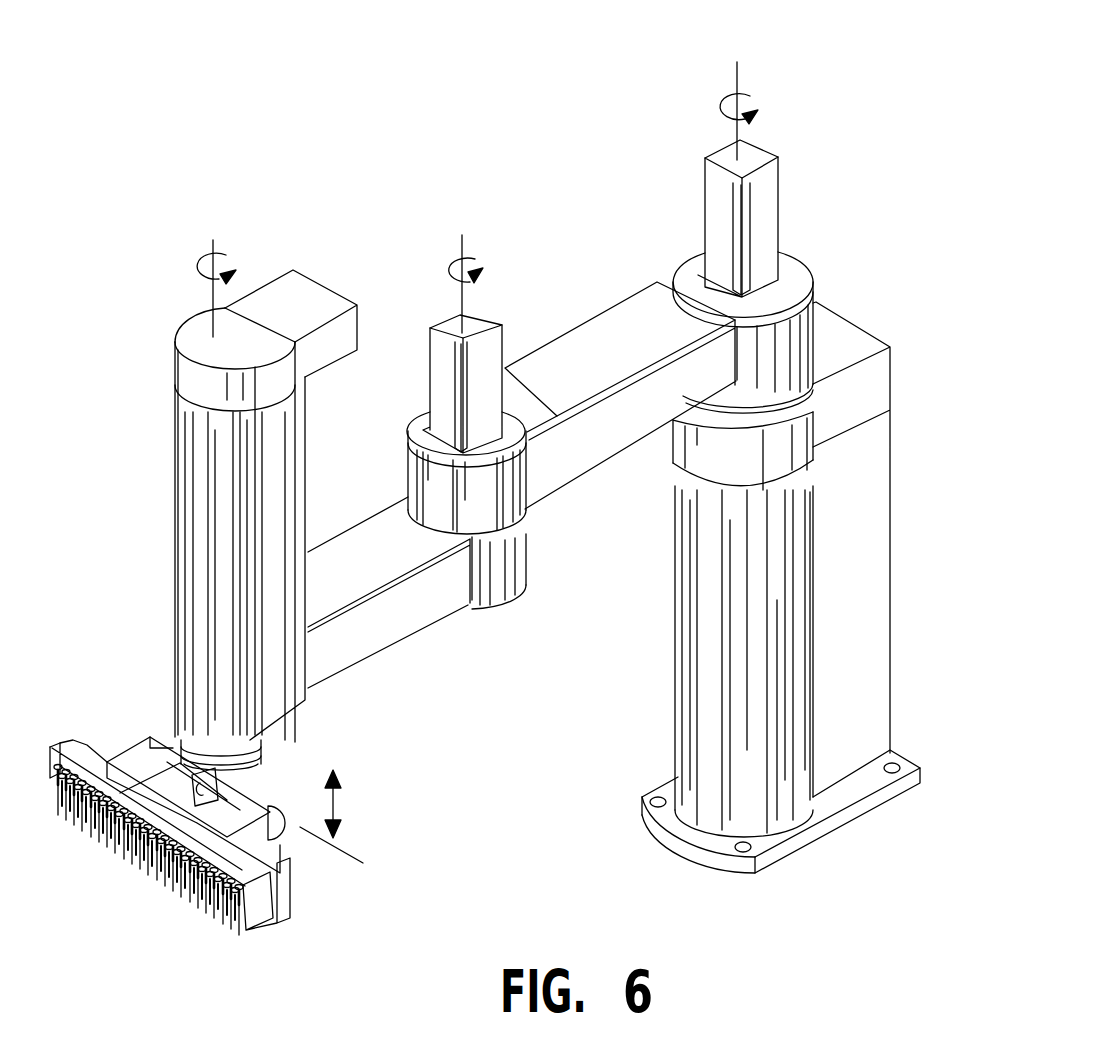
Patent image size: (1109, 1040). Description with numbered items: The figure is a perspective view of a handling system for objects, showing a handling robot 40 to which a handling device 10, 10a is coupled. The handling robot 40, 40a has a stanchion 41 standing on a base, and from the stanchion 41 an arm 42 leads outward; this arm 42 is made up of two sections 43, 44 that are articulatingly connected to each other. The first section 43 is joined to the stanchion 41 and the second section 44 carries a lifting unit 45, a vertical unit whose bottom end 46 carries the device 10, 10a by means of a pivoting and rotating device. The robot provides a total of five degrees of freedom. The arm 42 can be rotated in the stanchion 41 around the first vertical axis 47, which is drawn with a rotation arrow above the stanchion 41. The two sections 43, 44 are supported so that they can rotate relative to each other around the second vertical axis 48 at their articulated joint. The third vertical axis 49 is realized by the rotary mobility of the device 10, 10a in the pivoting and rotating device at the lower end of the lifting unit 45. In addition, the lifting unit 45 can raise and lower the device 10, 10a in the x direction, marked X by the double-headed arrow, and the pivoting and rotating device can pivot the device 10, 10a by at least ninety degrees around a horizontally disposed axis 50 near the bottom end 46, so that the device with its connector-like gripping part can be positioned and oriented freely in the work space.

The device 10 is at (314, 921).
The device 10a is at (147, 837).
The handling robot 40 is at (644, 636).
The robot arm 40a is at (485, 510).
The stanchion 41 is at (680, 715).
The arm 42 is at (555, 333).
The section 43 is at (637, 312).
The section 44 is at (358, 538).
The lifting unit 45 is at (203, 462).
The bottom end 46 is at (300, 741).
The first vertical axis 47 is at (738, 98).
The second vertical axis 48 is at (467, 272).
The third vertical axis 49 is at (205, 262).
The horizontally disposed axis 50 is at (355, 850).
The x direction X is at (335, 800).